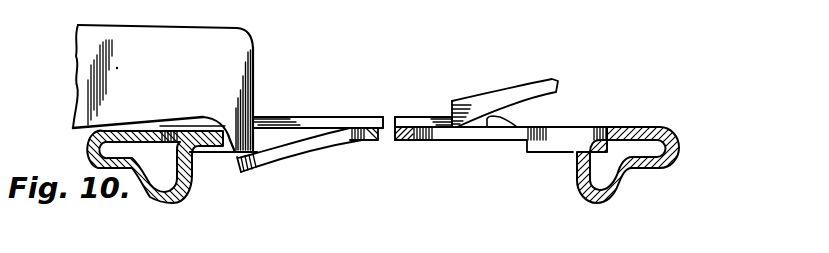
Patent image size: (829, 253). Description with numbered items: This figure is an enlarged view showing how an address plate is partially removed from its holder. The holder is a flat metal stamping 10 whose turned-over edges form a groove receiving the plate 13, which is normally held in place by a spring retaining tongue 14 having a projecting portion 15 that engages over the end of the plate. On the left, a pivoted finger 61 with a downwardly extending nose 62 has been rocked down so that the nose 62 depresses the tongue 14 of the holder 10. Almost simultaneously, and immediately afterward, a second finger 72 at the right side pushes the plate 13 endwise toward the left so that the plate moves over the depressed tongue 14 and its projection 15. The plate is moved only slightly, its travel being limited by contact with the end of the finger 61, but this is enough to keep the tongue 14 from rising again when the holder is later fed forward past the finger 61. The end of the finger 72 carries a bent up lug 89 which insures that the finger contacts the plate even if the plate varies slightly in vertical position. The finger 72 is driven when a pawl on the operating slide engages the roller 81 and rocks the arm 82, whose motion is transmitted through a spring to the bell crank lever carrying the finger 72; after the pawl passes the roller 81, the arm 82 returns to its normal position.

The flat metal stamping 10 is at (143, 140).
The plate 13 is at (397, 122).
The spring retaining tongue 14 is at (300, 148).
The projecting portion 15 is at (281, 141).
The finger 61 is at (204, 33).
The nose 62 is at (236, 157).
The second finger 72 is at (546, 85).
The bent up lug 89 is at (464, 103).
The roller 81 is at (517, 0).
The arm 82 is at (541, 6).